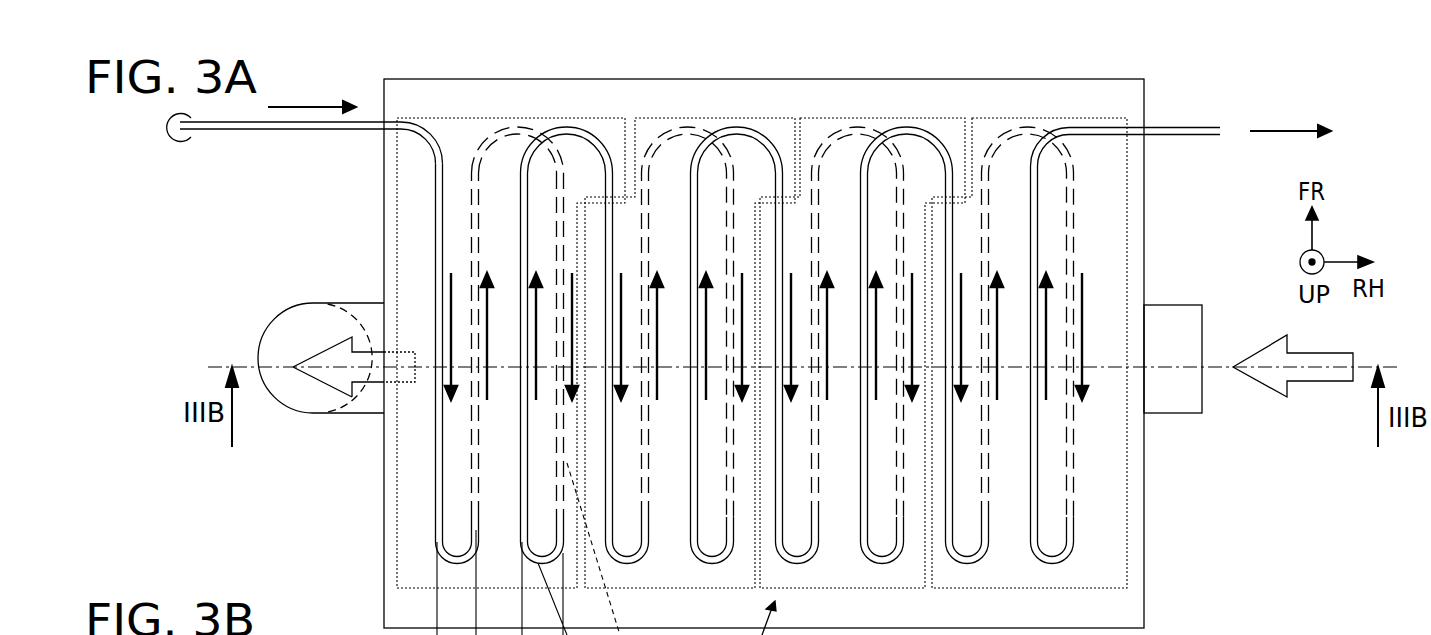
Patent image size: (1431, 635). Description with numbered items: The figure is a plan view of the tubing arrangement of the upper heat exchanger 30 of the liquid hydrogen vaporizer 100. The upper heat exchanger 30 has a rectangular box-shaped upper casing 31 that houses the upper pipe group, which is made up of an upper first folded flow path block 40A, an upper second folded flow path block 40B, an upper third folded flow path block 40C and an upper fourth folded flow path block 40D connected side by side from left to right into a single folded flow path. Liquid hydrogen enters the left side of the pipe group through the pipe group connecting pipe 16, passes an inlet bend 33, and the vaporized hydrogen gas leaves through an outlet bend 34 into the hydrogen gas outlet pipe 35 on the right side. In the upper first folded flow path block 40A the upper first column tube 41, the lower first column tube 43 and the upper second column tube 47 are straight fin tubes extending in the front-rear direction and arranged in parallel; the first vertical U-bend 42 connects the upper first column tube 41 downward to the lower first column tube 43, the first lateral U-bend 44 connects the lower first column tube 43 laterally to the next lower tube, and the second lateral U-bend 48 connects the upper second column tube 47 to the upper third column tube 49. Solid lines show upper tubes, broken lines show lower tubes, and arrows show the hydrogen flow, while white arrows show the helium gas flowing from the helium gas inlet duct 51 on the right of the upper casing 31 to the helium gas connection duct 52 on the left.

The liquid hydrogen vaporizer 100 is at (154, 201).
The pipe group connecting pipe 16 is at (282, 131).
The upper heat exchanger 30 is at (259, 290).
The upper casing 31 is at (820, 78).
The inlet bend portion 33 is at (430, 133).
The outlet bend portion 34 is at (1068, 130).
The hydrogen gas outlet pipe 35 is at (1190, 128).
The upper first folded flow path block 40A is at (497, 104).
The upper second folded flow path block 40B is at (673, 120).
The upper third folded flow path block 40C is at (875, 122).
The upper fourth folded flow path block 40D is at (1018, 113).
The upper first column tube 41 is at (437, 455).
The first vertical U-bend 42 is at (458, 560).
The lower first column tube 43 is at (470, 203).
The first lateral U-bend 44 is at (524, 118).
The upper second column tube 47 is at (522, 477).
The second lateral U-bend 48 is at (562, 133).
The upper third column tube 49 is at (615, 258).
The helium gas inlet duct 51 is at (1173, 414).
The helium gas connection duct 52 is at (285, 411).